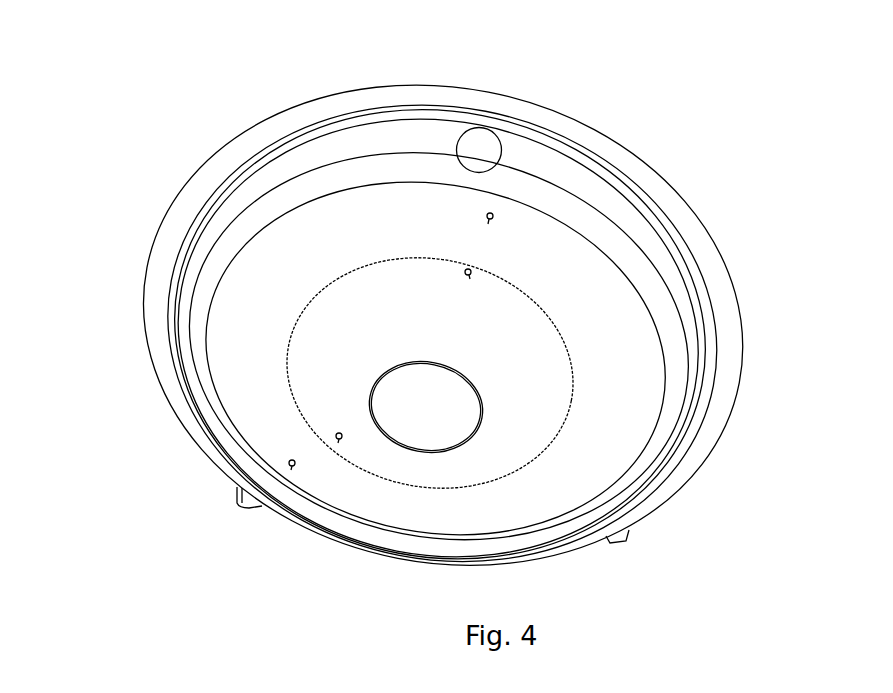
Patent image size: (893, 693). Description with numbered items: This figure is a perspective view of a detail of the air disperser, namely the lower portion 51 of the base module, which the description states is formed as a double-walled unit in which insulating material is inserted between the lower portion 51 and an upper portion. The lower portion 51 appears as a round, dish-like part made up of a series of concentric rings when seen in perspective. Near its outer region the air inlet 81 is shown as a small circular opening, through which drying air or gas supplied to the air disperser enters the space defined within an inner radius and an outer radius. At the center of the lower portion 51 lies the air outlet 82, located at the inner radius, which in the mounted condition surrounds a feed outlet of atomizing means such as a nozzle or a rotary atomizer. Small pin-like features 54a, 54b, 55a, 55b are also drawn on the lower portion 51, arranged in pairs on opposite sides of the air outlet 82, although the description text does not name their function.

The lower portion 51 is at (190, 313).
The air inlet 81 is at (480, 148).
The air outlet 82 is at (483, 402).
The first protrusion 54a is at (492, 220).
The second protrusion 54b is at (289, 463).
The first projection 55a is at (471, 273).
The second projection 55b is at (336, 436).